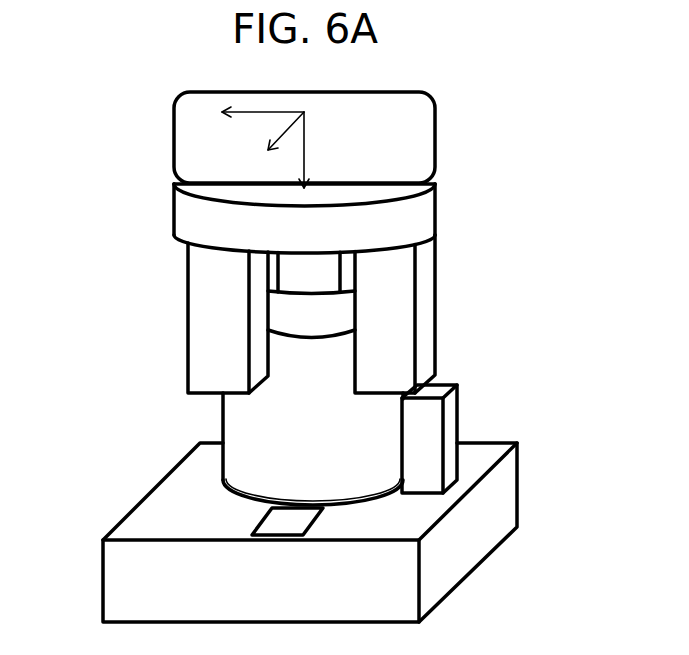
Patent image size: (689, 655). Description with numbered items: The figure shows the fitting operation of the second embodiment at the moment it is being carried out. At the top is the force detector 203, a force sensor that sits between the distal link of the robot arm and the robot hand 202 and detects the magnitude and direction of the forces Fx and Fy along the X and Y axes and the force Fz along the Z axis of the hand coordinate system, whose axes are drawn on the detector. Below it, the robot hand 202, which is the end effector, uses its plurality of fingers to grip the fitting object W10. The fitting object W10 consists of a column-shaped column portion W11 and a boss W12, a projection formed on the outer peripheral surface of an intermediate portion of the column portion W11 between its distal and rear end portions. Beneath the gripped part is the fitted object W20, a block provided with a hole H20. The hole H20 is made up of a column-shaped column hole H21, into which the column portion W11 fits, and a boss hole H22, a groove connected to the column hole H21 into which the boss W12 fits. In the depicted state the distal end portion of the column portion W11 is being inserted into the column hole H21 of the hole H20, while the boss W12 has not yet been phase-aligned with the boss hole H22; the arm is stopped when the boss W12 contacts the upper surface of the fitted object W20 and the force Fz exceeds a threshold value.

The force detector 203 is at (428, 139).
The robot hand 202 is at (436, 195).
The fitting object W10 is at (409, 398).
The column portion W11 is at (327, 353).
The boss W12 is at (448, 415).
The fitted object W20 is at (507, 503).
The hole H20 is at (209, 457).
The column hole H21 is at (218, 480).
The boss hole H22 is at (273, 525).